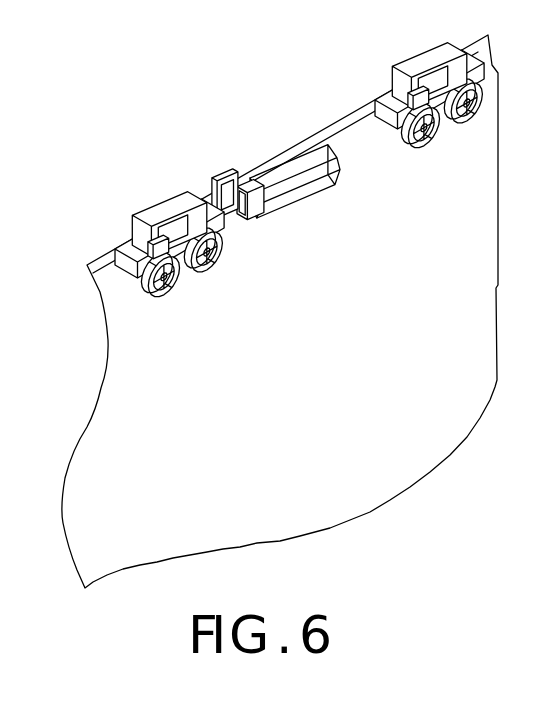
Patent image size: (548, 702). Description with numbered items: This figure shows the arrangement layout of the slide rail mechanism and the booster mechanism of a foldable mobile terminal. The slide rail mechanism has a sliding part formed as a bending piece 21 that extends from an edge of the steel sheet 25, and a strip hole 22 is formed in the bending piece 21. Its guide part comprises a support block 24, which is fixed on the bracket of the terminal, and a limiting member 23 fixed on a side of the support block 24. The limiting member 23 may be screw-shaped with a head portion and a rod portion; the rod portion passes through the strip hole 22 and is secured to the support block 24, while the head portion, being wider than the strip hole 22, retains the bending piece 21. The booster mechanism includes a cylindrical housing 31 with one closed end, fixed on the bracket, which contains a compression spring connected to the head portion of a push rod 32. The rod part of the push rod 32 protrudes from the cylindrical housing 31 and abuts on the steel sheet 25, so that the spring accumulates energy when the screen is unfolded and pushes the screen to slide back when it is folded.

The bending piece 21 is at (187, 205).
The strip hole 22 is at (172, 215).
The limiting member 23 is at (150, 227).
The support block 24 is at (127, 280).
The steel sheet 25 is at (128, 385).
The cylindrical housing 31 is at (302, 192).
The push rod 32 is at (272, 216).